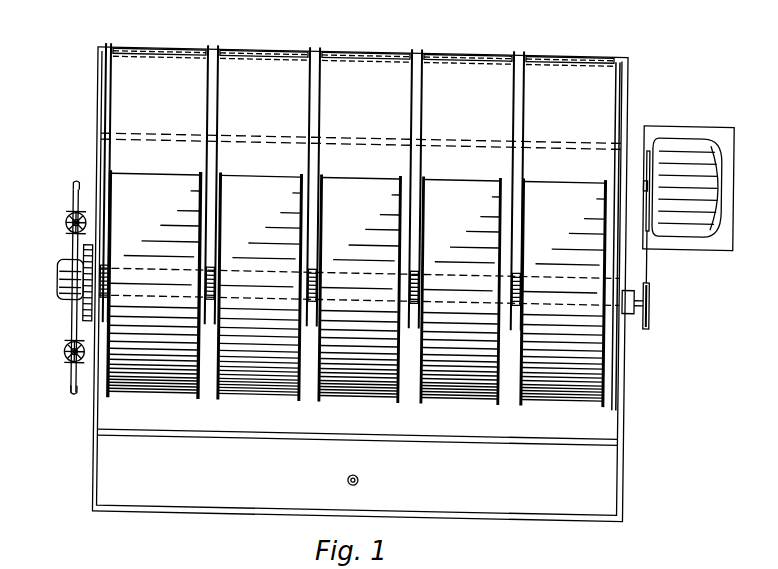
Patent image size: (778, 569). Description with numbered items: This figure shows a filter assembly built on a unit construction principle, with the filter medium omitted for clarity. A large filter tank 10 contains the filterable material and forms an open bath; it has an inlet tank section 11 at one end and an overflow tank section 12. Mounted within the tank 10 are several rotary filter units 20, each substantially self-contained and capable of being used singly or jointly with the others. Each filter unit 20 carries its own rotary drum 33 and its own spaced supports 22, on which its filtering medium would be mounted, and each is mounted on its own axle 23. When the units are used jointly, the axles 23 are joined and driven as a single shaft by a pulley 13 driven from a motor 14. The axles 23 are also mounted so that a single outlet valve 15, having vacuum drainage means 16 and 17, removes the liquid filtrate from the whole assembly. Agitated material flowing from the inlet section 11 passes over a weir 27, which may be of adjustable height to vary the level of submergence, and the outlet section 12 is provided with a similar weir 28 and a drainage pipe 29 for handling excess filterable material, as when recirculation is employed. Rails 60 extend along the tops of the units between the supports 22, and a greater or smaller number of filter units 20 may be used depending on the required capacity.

The filter tank 10 is at (608, 420).
The inlet tank section 11 is at (117, 104).
The overflow tank section 12 is at (100, 470).
The pulley 13 is at (653, 306).
The motor 14 is at (688, 228).
The outlet valve 15 is at (63, 290).
The vacuum drainage means 16 is at (78, 188).
The vacuum drainage means 17 is at (74, 372).
The rotary filter unit 20 is at (163, 221).
The spaced supports 22 is at (410, 122).
The axle 23 is at (143, 278).
The weir 27 is at (142, 133).
The weir 28 is at (302, 437).
The drainage pipe 29 is at (364, 475).
The rotary drum 33 is at (135, 388).
The rail 60 is at (143, 48).